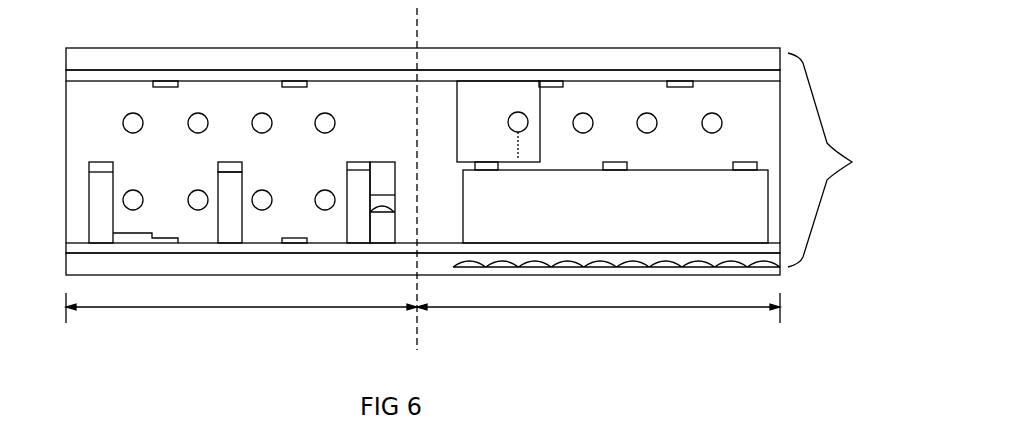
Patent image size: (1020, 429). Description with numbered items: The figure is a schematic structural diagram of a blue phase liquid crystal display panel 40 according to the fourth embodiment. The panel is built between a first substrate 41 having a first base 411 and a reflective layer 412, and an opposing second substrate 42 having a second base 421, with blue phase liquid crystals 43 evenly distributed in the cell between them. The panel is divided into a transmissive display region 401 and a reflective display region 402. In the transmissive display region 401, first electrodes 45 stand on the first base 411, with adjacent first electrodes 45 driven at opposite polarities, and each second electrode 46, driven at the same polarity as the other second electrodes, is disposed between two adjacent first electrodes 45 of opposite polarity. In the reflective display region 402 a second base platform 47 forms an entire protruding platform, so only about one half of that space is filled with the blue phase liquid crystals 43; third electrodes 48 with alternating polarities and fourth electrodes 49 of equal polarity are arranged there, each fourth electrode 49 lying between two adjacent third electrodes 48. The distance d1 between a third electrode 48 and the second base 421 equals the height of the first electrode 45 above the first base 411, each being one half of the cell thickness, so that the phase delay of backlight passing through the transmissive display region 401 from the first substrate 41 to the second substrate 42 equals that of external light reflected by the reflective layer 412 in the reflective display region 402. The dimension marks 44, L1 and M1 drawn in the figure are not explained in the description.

The blue phase liquid crystal display panel 40 is at (852, 162).
The first substrate 41 is at (64, 260).
The first base 411 is at (75, 250).
The reflective layer 412 is at (468, 267).
The second substrate 42 is at (62, 50).
The second base 421 is at (80, 75).
The blue phase liquid crystals 43 is at (123, 123).
The support post 44 is at (227, 225).
The first electrode 45 is at (230, 167).
The second electrode 46 is at (297, 243).
The second base platform 47 is at (502, 215).
The third electrode 48 is at (618, 167).
The fourth electrode 49 is at (683, 87).
The transmissive display region 401 is at (241, 299).
The reflective display region 402 is at (598, 299).
The step length dimension L1 is at (145, 222).
The hole offset dimension M1 is at (519, 146).
The distance d1 is at (481, 121).